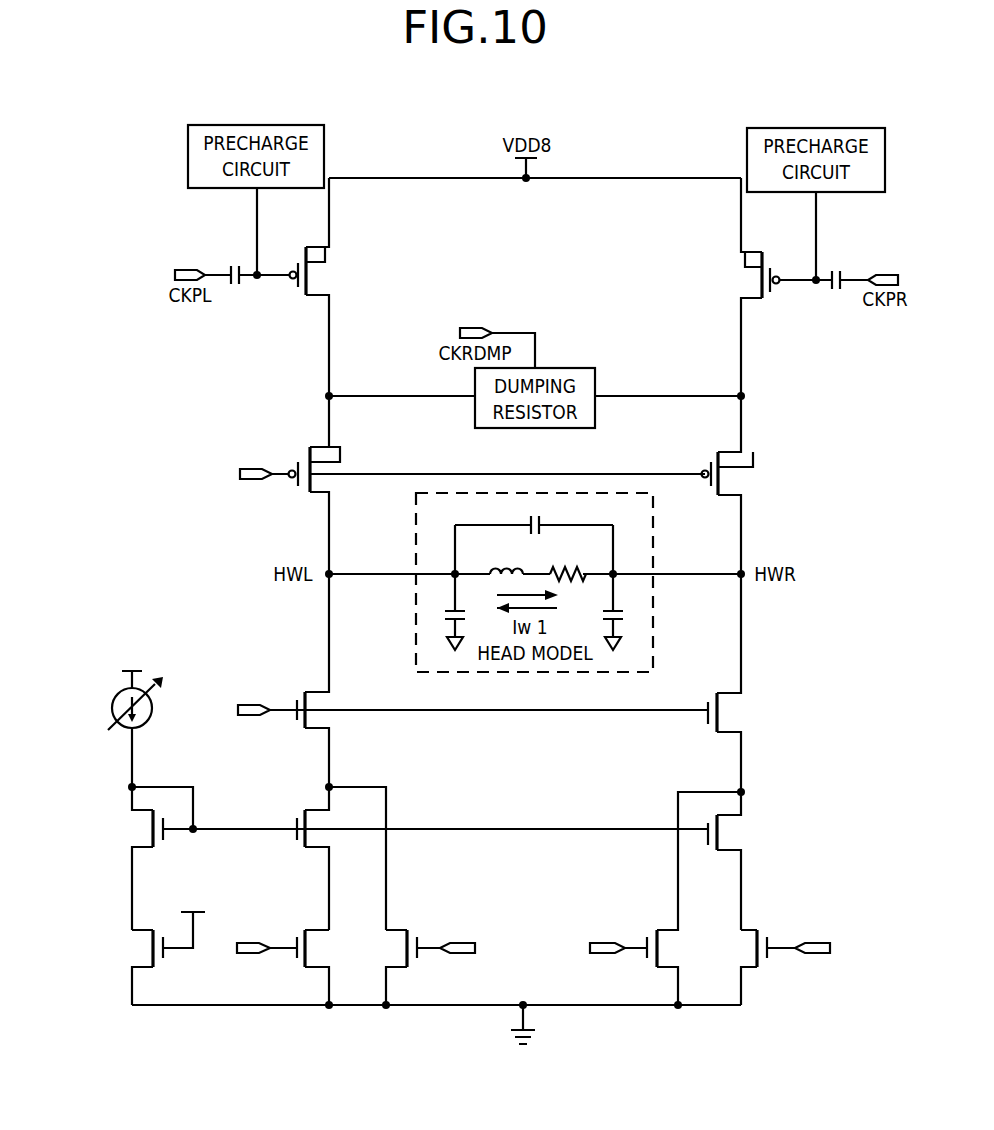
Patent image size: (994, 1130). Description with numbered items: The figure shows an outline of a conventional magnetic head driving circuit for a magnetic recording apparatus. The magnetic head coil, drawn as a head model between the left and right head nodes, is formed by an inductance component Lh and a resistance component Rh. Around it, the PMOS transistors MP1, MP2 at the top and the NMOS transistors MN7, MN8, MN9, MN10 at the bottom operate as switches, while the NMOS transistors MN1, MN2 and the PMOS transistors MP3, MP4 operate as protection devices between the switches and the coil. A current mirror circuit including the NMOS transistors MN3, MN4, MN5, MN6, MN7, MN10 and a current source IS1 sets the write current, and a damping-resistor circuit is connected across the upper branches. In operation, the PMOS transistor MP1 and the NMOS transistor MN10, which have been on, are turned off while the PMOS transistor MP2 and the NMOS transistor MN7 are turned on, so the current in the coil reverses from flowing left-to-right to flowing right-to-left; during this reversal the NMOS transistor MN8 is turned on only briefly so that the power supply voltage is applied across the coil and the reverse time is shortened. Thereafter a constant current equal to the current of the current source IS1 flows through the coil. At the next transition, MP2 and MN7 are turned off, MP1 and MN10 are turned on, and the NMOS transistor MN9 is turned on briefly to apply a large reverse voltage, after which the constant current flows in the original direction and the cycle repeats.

The PMOS transistor MP1 is at (333, 284).
The PMOS transistor MP2 is at (734, 290).
The PMOS transistor MP3 is at (335, 491).
The PMOS transistor MP4 is at (745, 484).
The NMOS transistor MN1 is at (330, 728).
The NMOS transistor MN2 is at (742, 713).
The NMOS transistor MN3 is at (127, 828).
The NMOS transistor MN4 is at (315, 848).
The NMOS transistor MN5 is at (742, 834).
The NMOS transistor MN6 is at (127, 950).
The NMOS transistor MN7 is at (313, 922).
The NMOS transistor MN8 is at (400, 922).
The NMOS transistor MN9 is at (662, 922).
The NMOS transistor MN10 is at (750, 922).
The current source IS1 is at (112, 698).
The inductance component Lh is at (506, 559).
The resistance component Rh is at (568, 562).